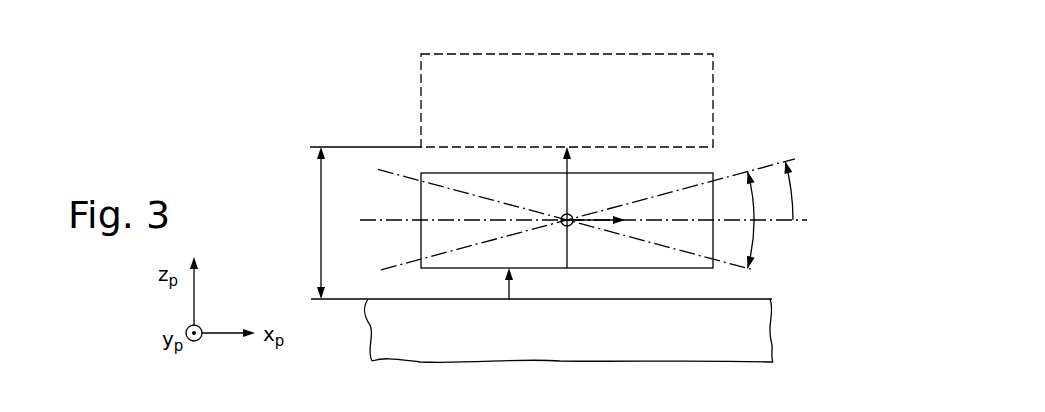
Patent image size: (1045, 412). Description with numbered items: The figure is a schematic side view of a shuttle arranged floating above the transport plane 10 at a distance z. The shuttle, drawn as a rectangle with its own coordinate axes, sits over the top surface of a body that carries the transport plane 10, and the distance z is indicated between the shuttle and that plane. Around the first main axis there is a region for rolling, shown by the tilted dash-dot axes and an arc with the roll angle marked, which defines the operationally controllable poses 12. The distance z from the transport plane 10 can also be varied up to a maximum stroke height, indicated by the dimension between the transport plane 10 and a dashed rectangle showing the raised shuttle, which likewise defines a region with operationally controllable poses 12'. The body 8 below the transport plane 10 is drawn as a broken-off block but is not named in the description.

The workpiece / substrate 8 is at (677, 331).
The transport plane 10 is at (584, 275).
The operationally controllable poses 12 is at (589, 204).
The operationally controllable poses 12' is at (466, 176).